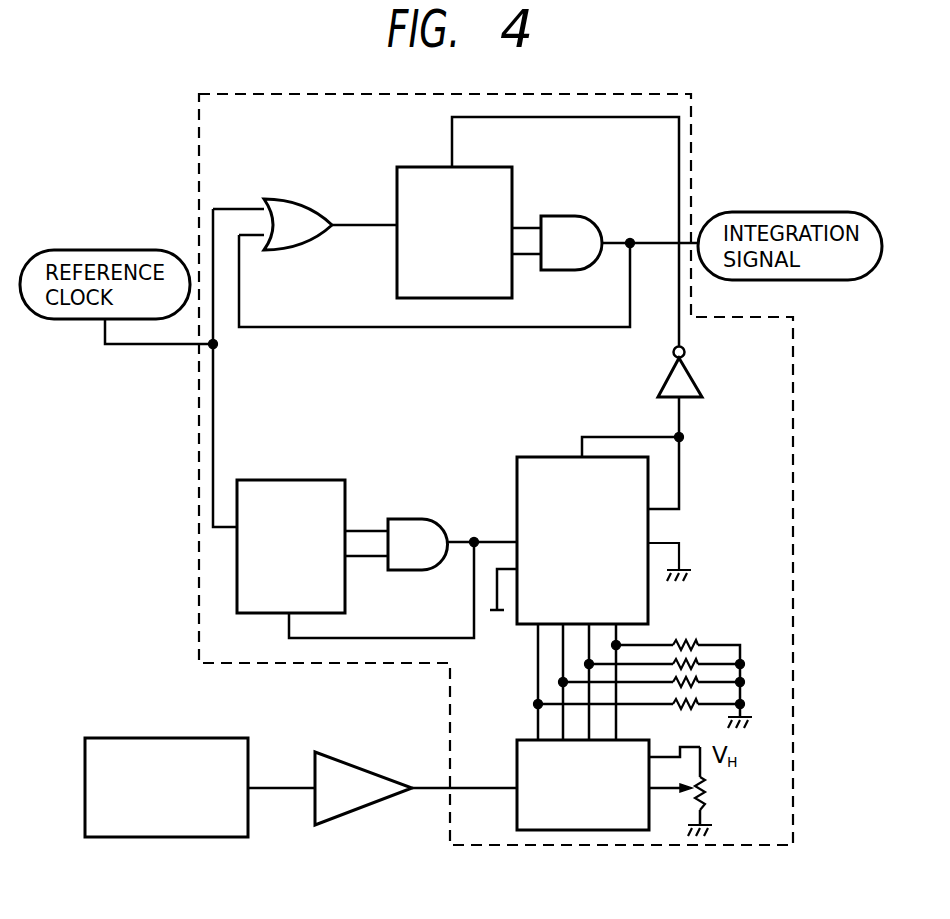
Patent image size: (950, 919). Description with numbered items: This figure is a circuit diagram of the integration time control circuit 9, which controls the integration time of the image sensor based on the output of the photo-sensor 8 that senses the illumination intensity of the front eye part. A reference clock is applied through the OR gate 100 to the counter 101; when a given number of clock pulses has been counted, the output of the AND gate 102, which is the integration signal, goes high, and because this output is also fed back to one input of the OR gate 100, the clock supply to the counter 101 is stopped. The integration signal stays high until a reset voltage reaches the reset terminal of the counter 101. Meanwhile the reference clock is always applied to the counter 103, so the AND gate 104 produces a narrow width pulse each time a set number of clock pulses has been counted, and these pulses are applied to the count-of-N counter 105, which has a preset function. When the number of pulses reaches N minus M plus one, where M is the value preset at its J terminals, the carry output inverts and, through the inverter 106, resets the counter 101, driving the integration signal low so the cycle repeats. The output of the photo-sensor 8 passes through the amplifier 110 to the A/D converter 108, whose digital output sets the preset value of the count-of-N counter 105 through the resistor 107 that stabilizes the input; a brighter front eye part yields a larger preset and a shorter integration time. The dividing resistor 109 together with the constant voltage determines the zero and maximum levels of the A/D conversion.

The photo-sensor 8 is at (205, 737).
The integration time control circuit 9 is at (691, 170).
The OR gate 100 is at (305, 197).
The counter 101 is at (512, 178).
The AND gate 102 is at (583, 216).
The counter 103 is at (318, 479).
The AND gate 104 is at (434, 518).
The count-of-N counter 105 is at (553, 457).
The inverter 106 is at (691, 376).
The resistor 107 is at (686, 643).
The A/D converter 108 is at (517, 741).
The dividing resistor 109 is at (712, 790).
The amplifier 110 is at (365, 769).